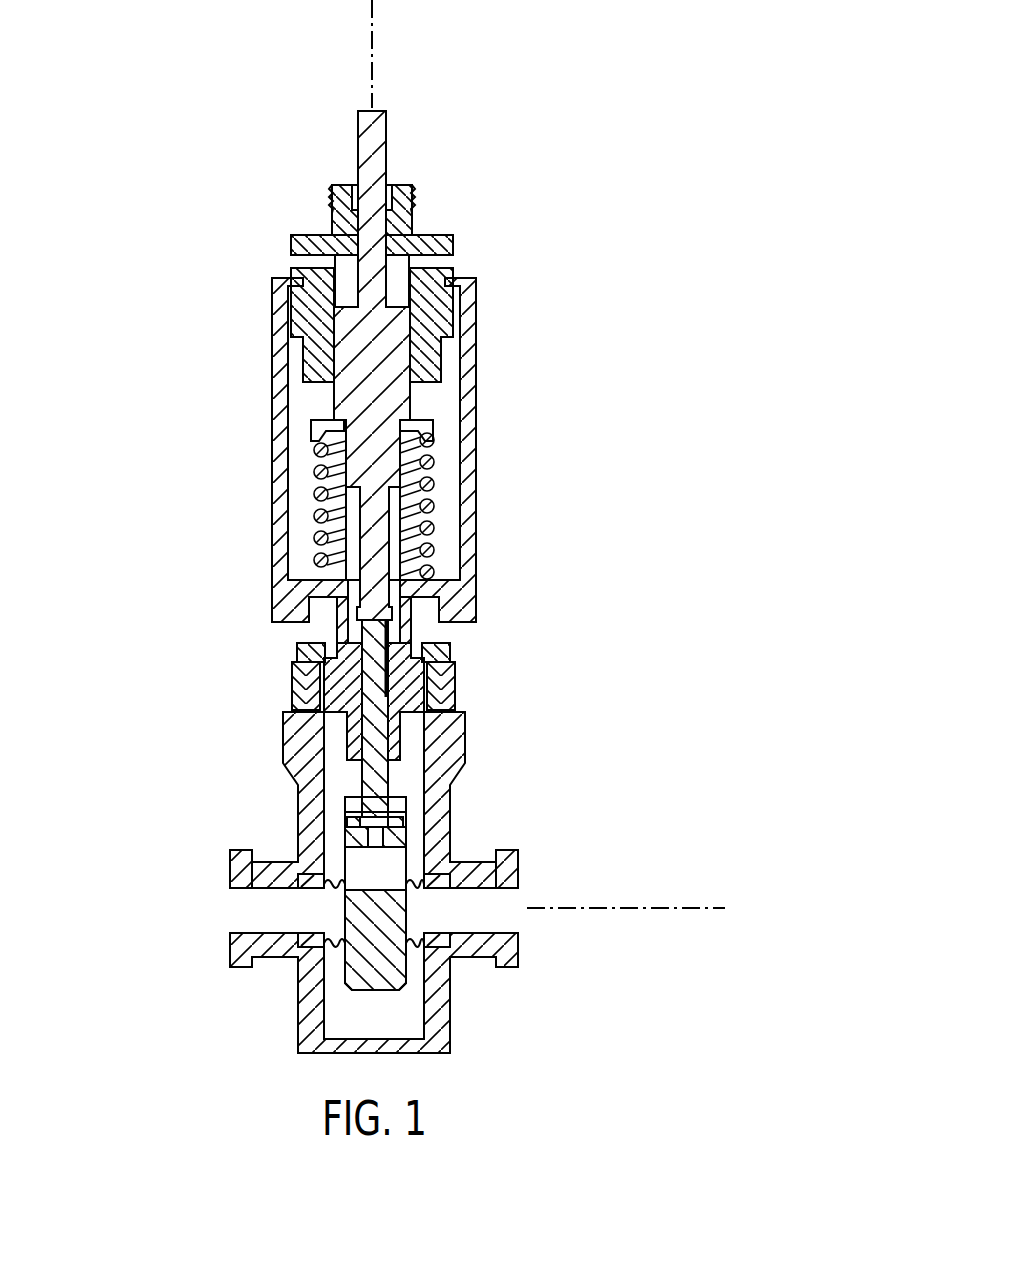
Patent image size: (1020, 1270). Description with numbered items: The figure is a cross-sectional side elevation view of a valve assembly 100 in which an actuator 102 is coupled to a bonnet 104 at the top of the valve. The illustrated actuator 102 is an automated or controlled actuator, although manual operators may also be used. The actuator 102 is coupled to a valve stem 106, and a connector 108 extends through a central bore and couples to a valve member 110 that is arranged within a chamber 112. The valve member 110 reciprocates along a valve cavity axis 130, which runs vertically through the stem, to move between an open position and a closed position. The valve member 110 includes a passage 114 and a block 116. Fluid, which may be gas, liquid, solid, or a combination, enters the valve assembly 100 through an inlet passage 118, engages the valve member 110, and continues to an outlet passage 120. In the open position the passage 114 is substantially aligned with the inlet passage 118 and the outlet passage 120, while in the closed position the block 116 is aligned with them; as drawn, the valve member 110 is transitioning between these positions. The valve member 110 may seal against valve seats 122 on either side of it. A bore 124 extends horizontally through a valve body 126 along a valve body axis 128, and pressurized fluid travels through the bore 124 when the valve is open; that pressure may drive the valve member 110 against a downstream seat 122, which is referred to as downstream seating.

The valve assembly 100 is at (433, 526).
The actuator 102 is at (361, 377).
The bonnet 104 is at (478, 689).
The valve stem 106 is at (375, 617).
The connector 108 is at (430, 562).
The valve member 110 is at (358, 882).
The chamber 112 is at (417, 1017).
The passage 114 is at (385, 865).
The block 116 is at (443, 906).
The inlet passage 118 is at (253, 896).
The outlet passage 120 is at (510, 917).
The valve seats 122 is at (312, 875).
The bore 124 is at (250, 933).
The valve body 126 is at (438, 815).
The valve body axis 128 is at (668, 905).
The valve cavity axis 130 is at (372, 36).